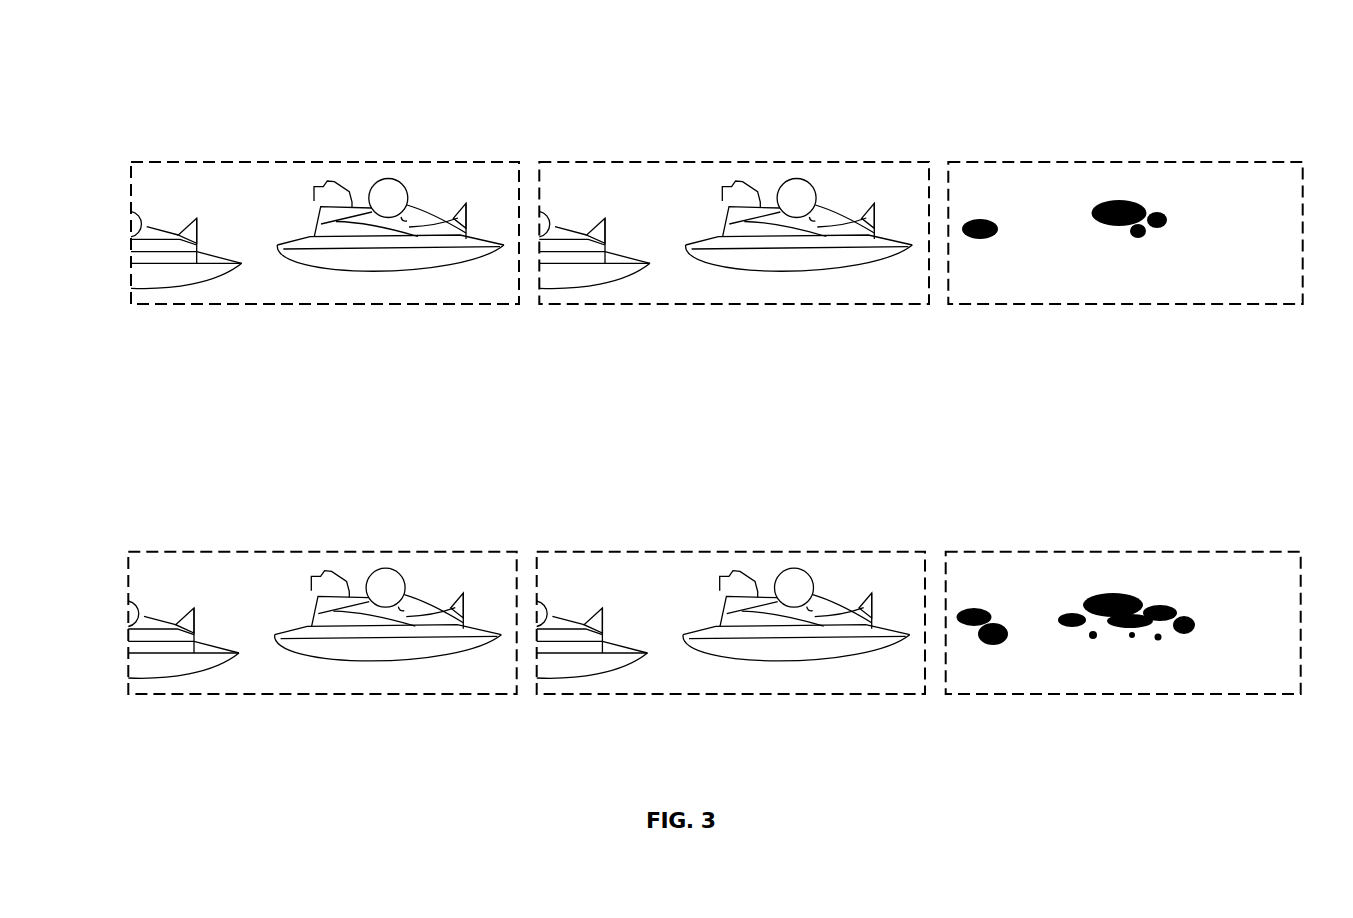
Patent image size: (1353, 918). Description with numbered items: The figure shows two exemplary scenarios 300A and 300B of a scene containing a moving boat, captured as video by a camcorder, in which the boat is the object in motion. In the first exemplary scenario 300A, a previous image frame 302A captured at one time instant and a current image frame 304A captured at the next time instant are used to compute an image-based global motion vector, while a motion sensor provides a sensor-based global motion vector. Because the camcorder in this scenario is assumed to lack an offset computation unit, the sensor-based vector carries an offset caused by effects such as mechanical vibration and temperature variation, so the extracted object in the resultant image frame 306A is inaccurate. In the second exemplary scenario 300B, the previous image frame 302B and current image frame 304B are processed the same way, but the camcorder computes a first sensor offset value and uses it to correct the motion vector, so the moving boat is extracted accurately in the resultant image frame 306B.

The first exemplary scenario 300A is at (200, 82).
The previous image frame 302A is at (308, 160).
The current image frame 304A is at (713, 160).
The resultant image frame 306A is at (1108, 160).
The second exemplary scenario 300B is at (225, 452).
The previous image frame 302B is at (308, 551).
The current image frame 304B is at (712, 550).
The resultant image frame 306B is at (1107, 549).